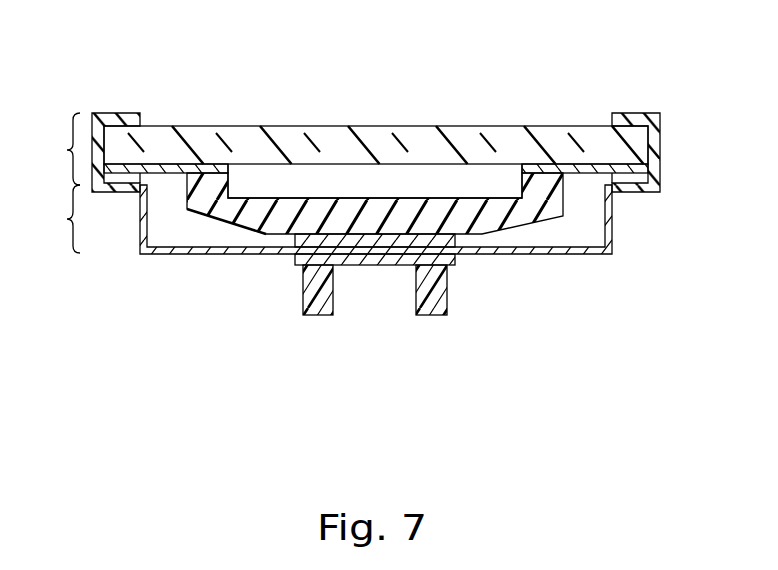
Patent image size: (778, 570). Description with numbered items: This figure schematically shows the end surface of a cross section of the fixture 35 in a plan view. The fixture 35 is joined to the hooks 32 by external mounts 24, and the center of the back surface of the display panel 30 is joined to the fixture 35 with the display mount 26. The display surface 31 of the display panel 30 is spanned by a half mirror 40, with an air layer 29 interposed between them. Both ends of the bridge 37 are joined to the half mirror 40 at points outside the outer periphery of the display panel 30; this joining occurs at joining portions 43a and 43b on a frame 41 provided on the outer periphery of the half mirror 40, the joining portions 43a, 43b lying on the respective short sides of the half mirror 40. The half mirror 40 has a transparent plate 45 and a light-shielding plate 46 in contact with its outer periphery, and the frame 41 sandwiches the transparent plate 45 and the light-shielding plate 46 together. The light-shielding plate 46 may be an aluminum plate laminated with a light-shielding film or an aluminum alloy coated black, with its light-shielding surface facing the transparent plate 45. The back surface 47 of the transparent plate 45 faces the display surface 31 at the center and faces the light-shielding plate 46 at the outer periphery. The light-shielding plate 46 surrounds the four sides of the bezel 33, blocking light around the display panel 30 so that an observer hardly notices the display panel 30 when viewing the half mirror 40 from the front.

The external mount 24 is at (452, 263).
The display mount 26 is at (330, 240).
The air layer 29 is at (335, 177).
The display panel 30 is at (244, 205).
The display surface 31 is at (430, 198).
The hook 32 is at (435, 305).
The bezel 33 is at (198, 190).
The fixture 35 is at (323, 219).
The bridge 37 is at (525, 255).
The half mirror 40 is at (57, 149).
The frame 41 is at (98, 113).
The joining portion 43a is at (116, 202).
The joining portion 43b is at (638, 202).
The transparent plate 45 is at (270, 150).
The light-shielding plate 46 is at (185, 168).
The back surface 47 is at (470, 166).